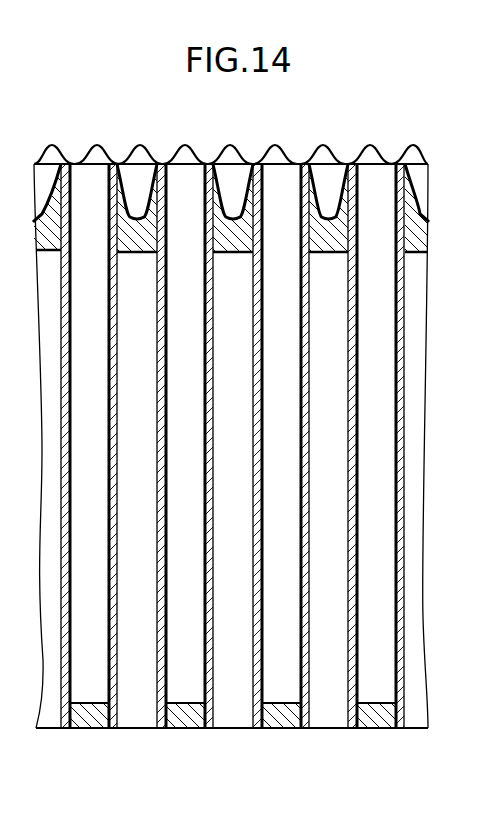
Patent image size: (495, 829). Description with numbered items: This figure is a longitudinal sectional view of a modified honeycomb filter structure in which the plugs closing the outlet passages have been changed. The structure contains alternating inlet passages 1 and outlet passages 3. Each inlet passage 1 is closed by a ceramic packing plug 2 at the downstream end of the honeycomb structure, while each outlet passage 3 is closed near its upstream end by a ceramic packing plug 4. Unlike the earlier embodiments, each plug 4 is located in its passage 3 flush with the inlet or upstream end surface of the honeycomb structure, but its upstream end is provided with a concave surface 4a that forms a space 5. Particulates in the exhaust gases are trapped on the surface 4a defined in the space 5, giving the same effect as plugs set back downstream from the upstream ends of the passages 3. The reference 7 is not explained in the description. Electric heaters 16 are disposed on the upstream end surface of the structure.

The inlet passage 1 is at (387, 317).
The ceramic packing plug 2 is at (370, 730).
The outlet passage 3 is at (333, 370).
The ceramic packing plug 4 is at (262, 222).
The concave surface 4a is at (248, 242).
The space 5 is at (227, 177).
The side wall film 7 is at (402, 523).
The electric heater 16 is at (371, 144).